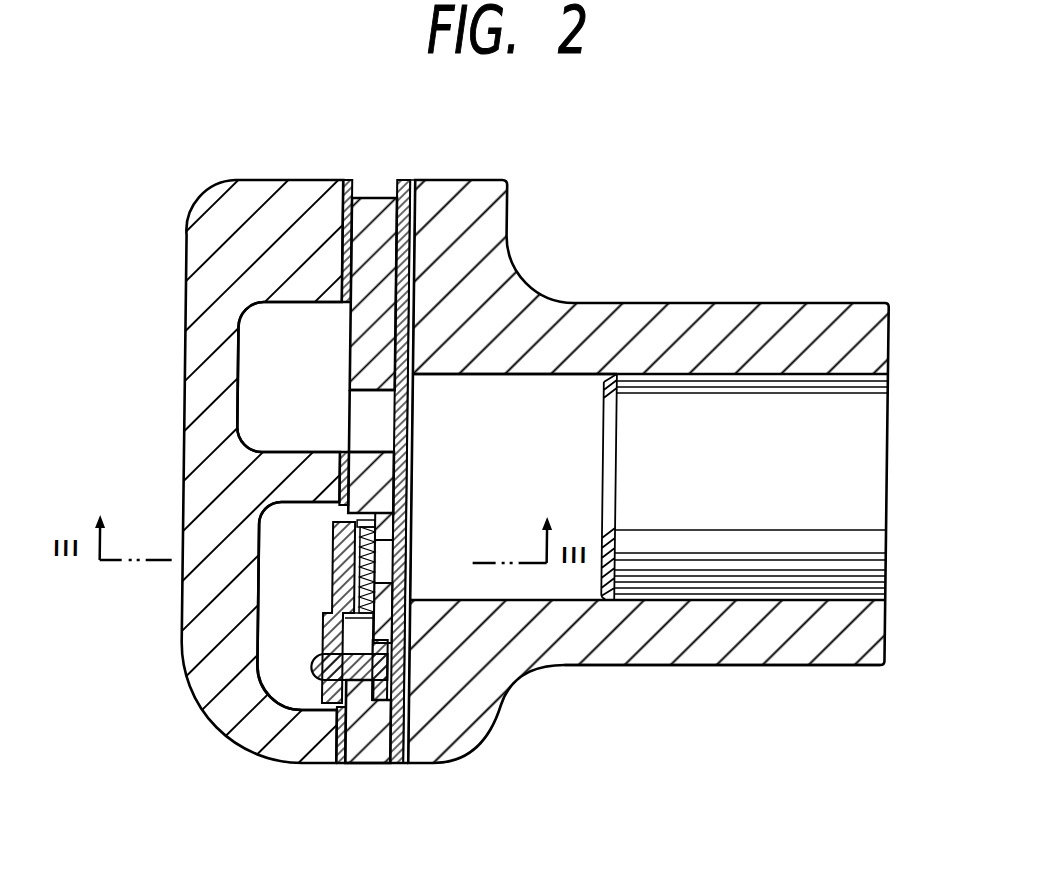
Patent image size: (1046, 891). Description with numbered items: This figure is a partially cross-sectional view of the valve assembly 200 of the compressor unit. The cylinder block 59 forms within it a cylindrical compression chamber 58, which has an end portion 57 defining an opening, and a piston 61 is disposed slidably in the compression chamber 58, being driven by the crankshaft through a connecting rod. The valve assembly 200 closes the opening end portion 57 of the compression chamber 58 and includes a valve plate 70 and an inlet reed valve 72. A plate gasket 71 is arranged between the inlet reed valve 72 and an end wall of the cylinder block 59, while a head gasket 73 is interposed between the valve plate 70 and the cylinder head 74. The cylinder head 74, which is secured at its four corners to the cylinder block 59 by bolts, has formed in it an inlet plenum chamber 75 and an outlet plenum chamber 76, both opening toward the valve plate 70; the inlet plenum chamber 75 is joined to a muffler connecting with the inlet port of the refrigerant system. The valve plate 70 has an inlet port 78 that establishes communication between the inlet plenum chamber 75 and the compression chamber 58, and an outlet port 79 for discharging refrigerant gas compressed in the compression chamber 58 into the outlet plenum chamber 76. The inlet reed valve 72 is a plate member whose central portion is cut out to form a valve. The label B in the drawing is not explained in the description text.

The end portion 57 is at (470, 422).
The compression chamber 58 is at (565, 392).
The cylinder block 59 is at (664, 645).
The piston 61 is at (776, 402).
The valve plate 70 is at (375, 212).
The plate gasket 71 is at (416, 180).
The inlet reed valve 72 is at (404, 180).
The head gasket 73 is at (345, 178).
The cylinder head 74 is at (258, 208).
The inlet plenum chamber 75 is at (286, 356).
The outlet plenum chamber 76 is at (286, 537).
The inlet port 78 is at (365, 427).
The outlet port 79 is at (391, 555).
The valve element B is at (300, 660).
The valve assembly 200 is at (381, 773).